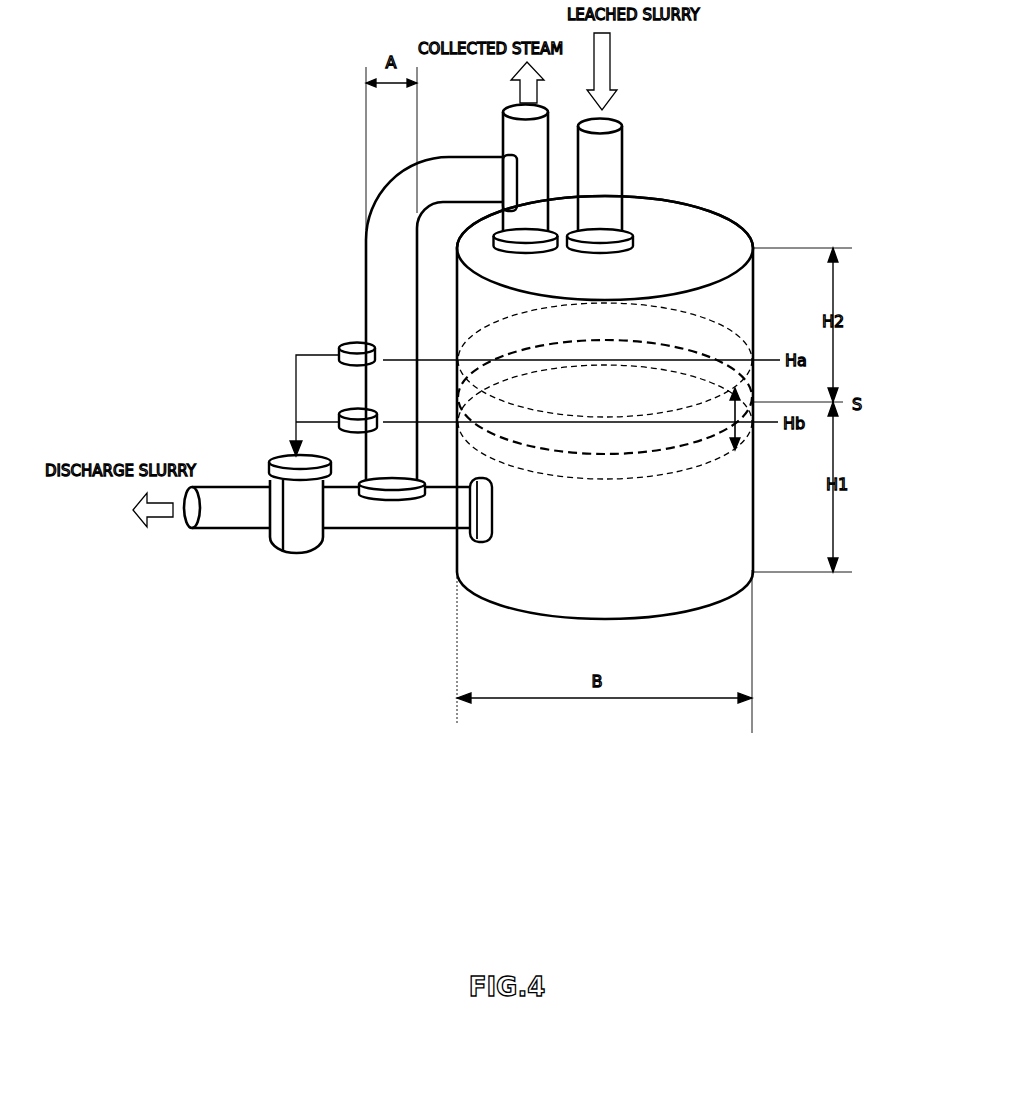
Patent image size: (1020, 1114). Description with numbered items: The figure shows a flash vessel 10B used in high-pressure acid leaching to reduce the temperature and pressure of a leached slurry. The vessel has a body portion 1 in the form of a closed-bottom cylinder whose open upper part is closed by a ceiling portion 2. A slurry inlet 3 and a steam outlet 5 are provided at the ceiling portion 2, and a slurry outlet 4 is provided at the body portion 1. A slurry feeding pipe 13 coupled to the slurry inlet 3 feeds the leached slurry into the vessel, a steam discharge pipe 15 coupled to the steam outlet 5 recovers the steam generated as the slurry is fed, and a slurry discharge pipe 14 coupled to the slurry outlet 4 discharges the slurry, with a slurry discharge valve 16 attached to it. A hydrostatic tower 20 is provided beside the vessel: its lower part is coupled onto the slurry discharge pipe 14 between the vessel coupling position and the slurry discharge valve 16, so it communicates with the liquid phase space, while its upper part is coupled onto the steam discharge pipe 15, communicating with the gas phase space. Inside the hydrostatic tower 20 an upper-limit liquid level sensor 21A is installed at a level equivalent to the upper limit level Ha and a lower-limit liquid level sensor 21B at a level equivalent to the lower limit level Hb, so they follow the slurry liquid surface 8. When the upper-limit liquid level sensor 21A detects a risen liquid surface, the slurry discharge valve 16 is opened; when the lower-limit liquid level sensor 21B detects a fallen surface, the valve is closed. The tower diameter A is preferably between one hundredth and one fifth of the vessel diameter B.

The body portion 1 is at (740, 318).
The ceiling portion 2 is at (742, 222).
The slurry inlet 3 is at (625, 233).
The slurry outlet 4 is at (463, 537).
The steam outlet 5 is at (500, 230).
The slurry liquid surface 8 is at (672, 451).
The flash vessel 10B is at (380, 737).
The slurry feeding pipe 13 is at (625, 133).
The slurry discharge pipe 14 is at (393, 510).
The steam discharge pipe 15 is at (517, 140).
The slurry discharge valve 16 is at (277, 455).
The hydrostatic tower 20 is at (366, 243).
The upper-limit liquid level sensor 21A is at (350, 340).
The lower-limit liquid level sensor 21B is at (347, 408).